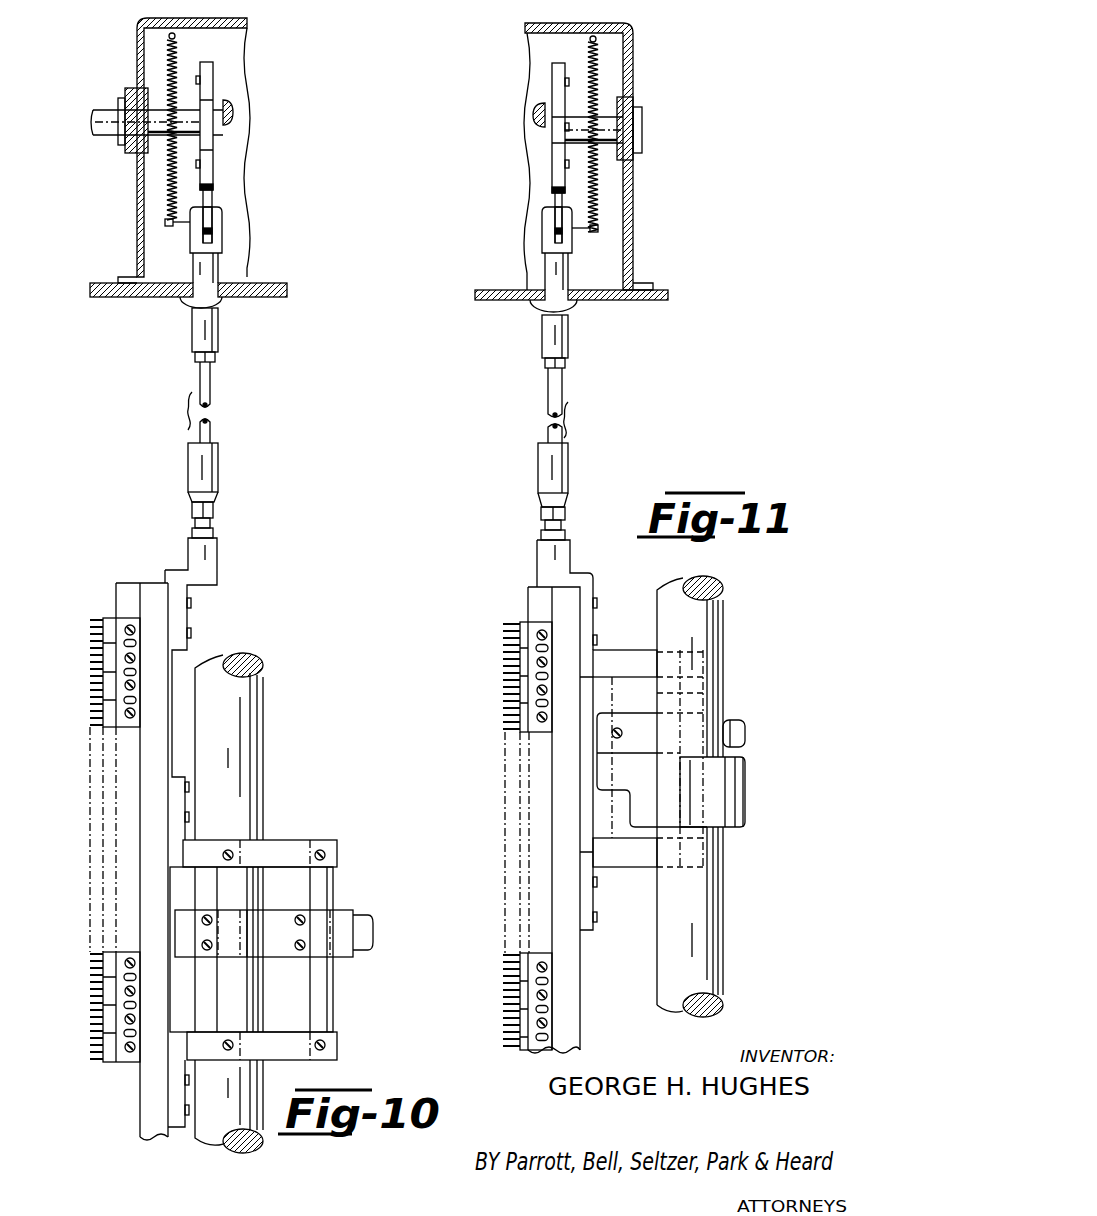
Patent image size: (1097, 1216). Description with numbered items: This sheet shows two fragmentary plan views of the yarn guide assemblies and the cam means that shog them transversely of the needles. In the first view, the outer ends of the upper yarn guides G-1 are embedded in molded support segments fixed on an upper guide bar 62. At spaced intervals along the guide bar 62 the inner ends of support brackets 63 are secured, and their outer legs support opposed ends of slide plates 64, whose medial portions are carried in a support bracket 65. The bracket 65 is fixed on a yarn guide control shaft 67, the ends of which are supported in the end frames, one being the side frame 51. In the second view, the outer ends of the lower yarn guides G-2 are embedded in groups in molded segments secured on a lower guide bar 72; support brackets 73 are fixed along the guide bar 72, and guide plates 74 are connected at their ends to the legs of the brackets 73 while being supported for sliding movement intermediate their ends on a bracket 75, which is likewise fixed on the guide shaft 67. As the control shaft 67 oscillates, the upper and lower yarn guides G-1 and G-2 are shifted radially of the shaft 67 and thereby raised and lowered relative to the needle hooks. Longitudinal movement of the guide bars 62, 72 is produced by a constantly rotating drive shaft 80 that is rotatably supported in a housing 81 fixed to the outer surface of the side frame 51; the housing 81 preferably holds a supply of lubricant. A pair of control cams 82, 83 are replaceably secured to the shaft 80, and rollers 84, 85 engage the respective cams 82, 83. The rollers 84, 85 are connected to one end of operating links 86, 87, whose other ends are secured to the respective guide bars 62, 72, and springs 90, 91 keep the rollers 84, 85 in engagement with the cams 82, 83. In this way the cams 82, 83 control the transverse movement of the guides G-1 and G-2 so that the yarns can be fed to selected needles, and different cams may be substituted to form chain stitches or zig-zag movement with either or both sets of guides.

In FIG. 10, the end frame 51 is at (115, 283).
In FIG. 10, the drive shaft 80 is at (114, 112).
In FIG. 10, the housing 81 is at (137, 187).
In FIG. 10, the control cam 82 is at (211, 78).
In FIG. 10, the roller 84 is at (210, 205).
In FIG. 10, the operating link 86 is at (206, 381).
In FIG. 10, the spring 90 is at (170, 162).
In FIG. 10, the upper guide bar 62 is at (156, 590).
In FIG. 10, the support bracket 63 is at (283, 843).
In FIG. 10, the slide plate 64 is at (318, 993).
In FIG. 10, the support bracket 65 is at (268, 918).
In FIG. 10, the yarn guide control shaft 67 is at (245, 740).
In FIG. 11, the yarn guide control shaft 67 is at (703, 905).
In FIG. 10, the upper yarn guide G-1 is at (110, 620).
In FIG. 11, the control cam 83 is at (555, 74).
In FIG. 11, the roller 85 is at (557, 201).
In FIG. 11, the operating link 87 is at (559, 378).
In FIG. 11, the spring 91 is at (595, 165).
In FIG. 11, the lower guide bar 72 is at (540, 598).
In FIG. 11, the support bracket 73 is at (637, 658).
In FIG. 11, the guide plate 74 is at (690, 695).
In FIG. 11, the bracket 75 is at (745, 780).
In FIG. 11, the lower yarn guide G-2 is at (524, 624).